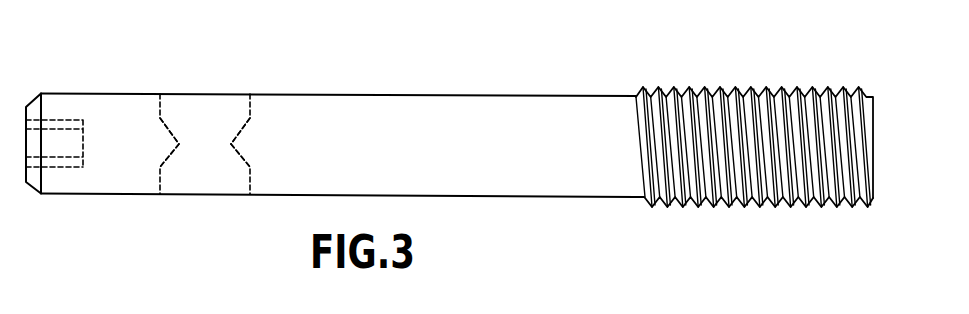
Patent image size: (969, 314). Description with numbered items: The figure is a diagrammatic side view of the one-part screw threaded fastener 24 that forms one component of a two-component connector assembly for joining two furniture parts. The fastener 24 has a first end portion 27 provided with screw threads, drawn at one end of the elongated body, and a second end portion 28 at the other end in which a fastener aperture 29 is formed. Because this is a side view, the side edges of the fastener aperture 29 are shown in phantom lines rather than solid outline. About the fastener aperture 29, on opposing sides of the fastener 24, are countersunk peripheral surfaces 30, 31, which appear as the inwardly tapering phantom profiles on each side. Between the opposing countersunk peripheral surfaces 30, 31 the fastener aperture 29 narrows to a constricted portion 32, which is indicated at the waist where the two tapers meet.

The screw threaded fastener 24 is at (449, 145).
The first end portion 27 is at (682, 115).
The second end portion 28 is at (516, 116).
The fastener aperture 29 is at (202, 158).
The countersunk peripheral surface 30 is at (238, 135).
The countersunk peripheral surface 31 is at (244, 162).
The constricted portion 32 is at (233, 144).